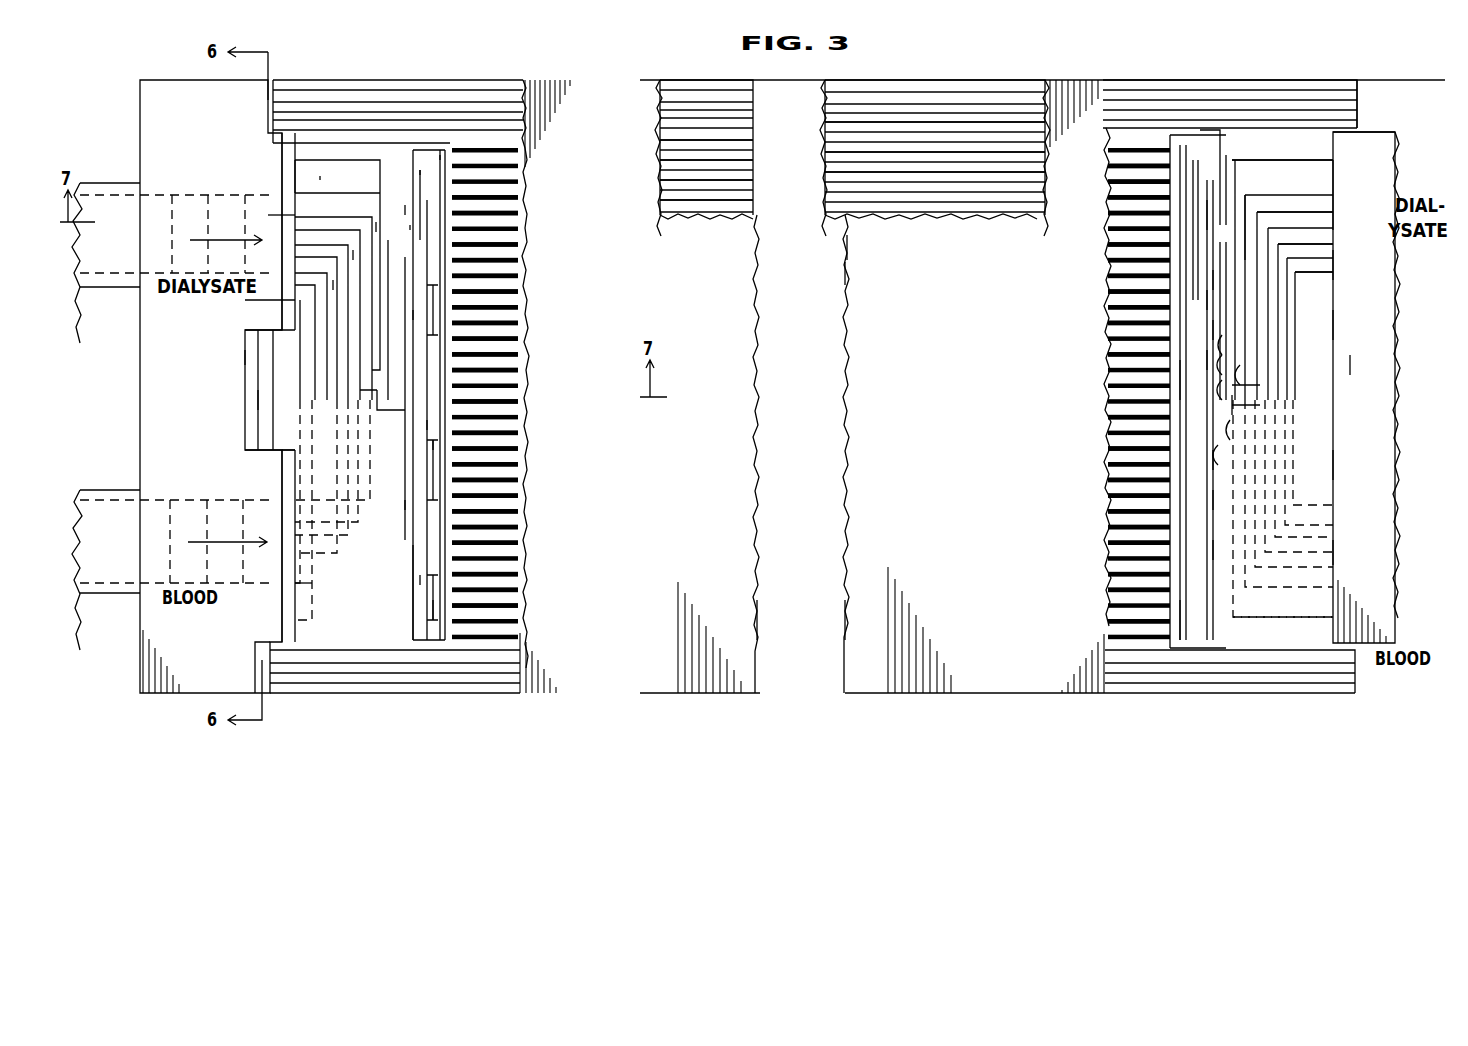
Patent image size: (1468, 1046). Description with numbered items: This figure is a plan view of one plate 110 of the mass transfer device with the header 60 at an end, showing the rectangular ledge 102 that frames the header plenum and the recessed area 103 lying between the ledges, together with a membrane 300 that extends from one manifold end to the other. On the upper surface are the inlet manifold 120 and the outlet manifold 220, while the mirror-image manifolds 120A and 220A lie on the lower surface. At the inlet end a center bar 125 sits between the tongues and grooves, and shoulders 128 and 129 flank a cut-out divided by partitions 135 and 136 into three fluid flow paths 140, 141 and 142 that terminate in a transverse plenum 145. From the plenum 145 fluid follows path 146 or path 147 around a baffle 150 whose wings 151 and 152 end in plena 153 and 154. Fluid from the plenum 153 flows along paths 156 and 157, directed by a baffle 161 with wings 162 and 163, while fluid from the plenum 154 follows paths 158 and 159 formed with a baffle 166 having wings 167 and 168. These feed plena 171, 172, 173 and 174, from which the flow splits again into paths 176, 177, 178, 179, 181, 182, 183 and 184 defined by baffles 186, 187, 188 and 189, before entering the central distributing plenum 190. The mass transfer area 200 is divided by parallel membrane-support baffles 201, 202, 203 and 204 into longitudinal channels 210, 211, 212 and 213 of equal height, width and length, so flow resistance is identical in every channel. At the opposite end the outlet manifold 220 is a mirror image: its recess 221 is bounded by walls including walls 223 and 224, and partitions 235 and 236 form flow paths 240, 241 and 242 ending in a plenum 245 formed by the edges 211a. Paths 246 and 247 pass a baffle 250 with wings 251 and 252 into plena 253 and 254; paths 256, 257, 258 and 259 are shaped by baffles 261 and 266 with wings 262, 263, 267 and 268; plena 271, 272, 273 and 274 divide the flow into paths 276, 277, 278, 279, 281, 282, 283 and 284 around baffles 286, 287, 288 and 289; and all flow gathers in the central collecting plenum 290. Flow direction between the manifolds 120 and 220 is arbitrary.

The header 60 is at (1388, 124).
The rectangular ledge 102 is at (1353, 323).
The recessed area 103 is at (245, 357).
The plate 110 is at (1376, 60).
The inlet manifold 120 is at (310, 136).
The manifold 120A is at (314, 599).
The center bar 125 is at (266, 400).
The shoulder 128 is at (318, 176).
The shoulder 129 is at (290, 475).
The partition 135 is at (293, 215).
The partition 136 is at (262, 307).
The fluid flow path 140 is at (378, 222).
The fluid flow path 141 is at (356, 244).
The fluid flow path 142 is at (336, 272).
The plenum 145 is at (436, 429).
The path 146 is at (434, 372).
The path 147 is at (430, 448).
The baffle 150 is at (431, 398).
The wing 151 is at (455, 282).
The wing 152 is at (446, 533).
The plenum 153 is at (450, 262).
The plenum 154 is at (415, 548).
The path 156 is at (412, 225).
The path 157 is at (412, 318).
The path 158 is at (396, 506).
The path 159 is at (422, 580).
The baffle 161 is at (431, 228).
The wing 162 is at (465, 217).
The wing 163 is at (431, 295).
The baffle 166 is at (431, 544).
The wing 167 is at (436, 506).
The wing 168 is at (450, 575).
The plenum 171 is at (410, 202).
The plenum 172 is at (436, 350).
The plenum 173 is at (326, 386).
The plenum 174 is at (418, 575).
The path 176 is at (423, 172).
The path 177 is at (455, 208).
The path 178 is at (424, 295).
The path 179 is at (444, 340).
The path 181 is at (460, 455).
The path 182 is at (446, 497).
The path 183 is at (441, 588).
The path 184 is at (432, 610).
The baffle 186 is at (440, 157).
The baffle 187 is at (460, 339).
The baffle 188 is at (436, 474).
The baffle 189 is at (450, 606).
The central distributing plenum 190 is at (455, 475).
The mass transfer area 200 is at (964, 110).
The baffle 201 is at (970, 152).
The baffle 202 is at (1010, 167).
The baffle 203 is at (871, 245).
The baffle 204 is at (899, 257).
The flow path 210 is at (682, 134).
The flow path 211 is at (792, 78).
The edges 211a is at (1209, 367).
The flow path 212 is at (840, 178).
The flow path 213 is at (862, 183).
The outlet manifold 220 is at (1320, 174).
The manifold 220A is at (1276, 621).
The recess 221 is at (1305, 147).
The wall 223 is at (1246, 230).
The wall 224 is at (1356, 465).
The partition 235 is at (1332, 220).
The partition 236 is at (1332, 262).
The fluid flow path 240 is at (1322, 209).
The fluid flow path 241 is at (1325, 235).
The fluid flow path 242 is at (1335, 264).
The plenum 245 is at (1208, 393).
The path 246 is at (1208, 321).
The path 247 is at (1198, 497).
The baffle 250 is at (1223, 388).
The wing 251 is at (1201, 299).
The wing 252 is at (1198, 465).
The plenum 253 is at (1210, 217).
The plenum 254 is at (1375, 552).
The path 256 is at (1198, 243).
The path 257 is at (1198, 275).
The path 258 is at (1201, 520).
The path 259 is at (1203, 582).
The baffle 261 is at (1198, 263).
The wing 262 is at (1198, 208).
The wing 263 is at (1201, 277).
The baffle 266 is at (1203, 534).
The wing 267 is at (1215, 465).
The wing 268 is at (1193, 542).
The plenum 271 is at (1196, 177).
The plenum 272 is at (1200, 328).
The plenum 273 is at (1206, 447).
The plenum 274 is at (1206, 619).
The path 276 is at (1190, 168).
The path 277 is at (1195, 225).
The path 278 is at (1203, 292).
The path 279 is at (1198, 350).
The path 281 is at (1205, 425).
The path 282 is at (1208, 505).
The path 283 is at (1204, 556).
The path 284 is at (1175, 625).
The baffle 286 is at (1195, 193).
The baffle 287 is at (1198, 312).
The baffle 288 is at (1203, 479).
The baffle 289 is at (1206, 599).
The central collecting plenum 290 is at (1167, 372).
The membrane 300 is at (869, 604).